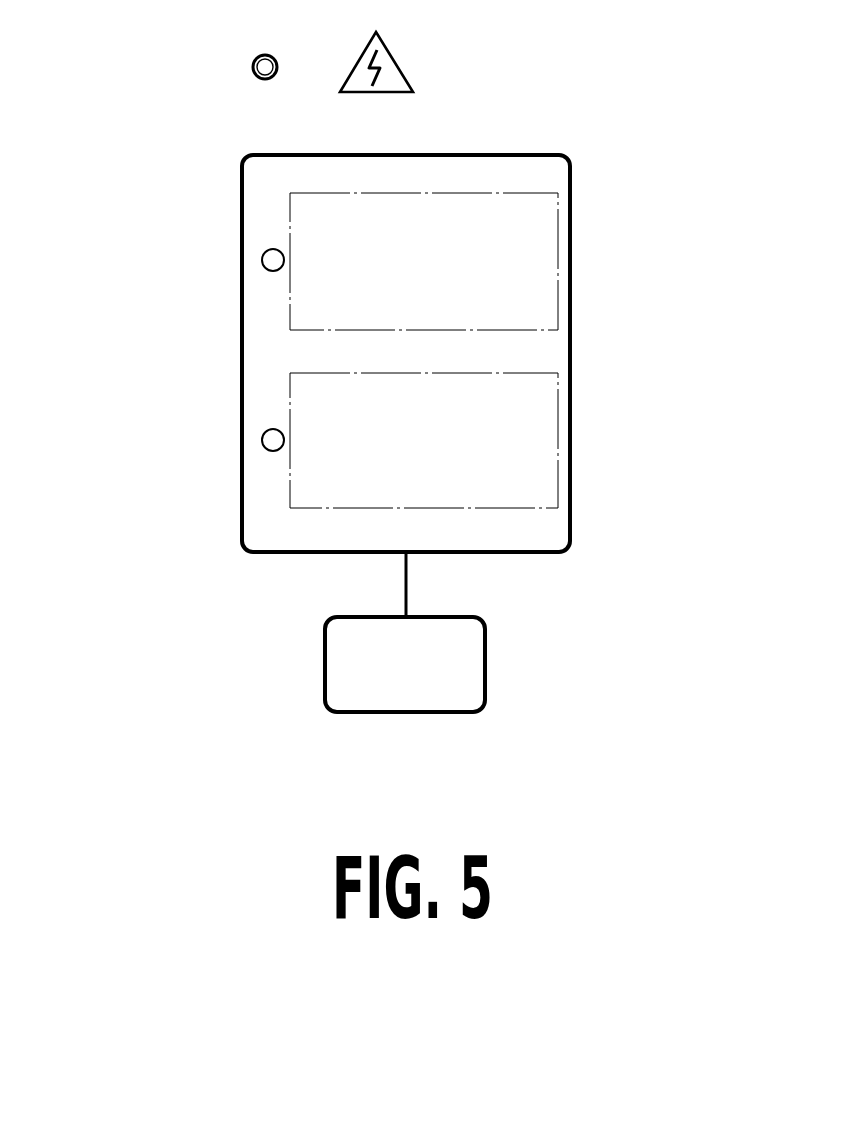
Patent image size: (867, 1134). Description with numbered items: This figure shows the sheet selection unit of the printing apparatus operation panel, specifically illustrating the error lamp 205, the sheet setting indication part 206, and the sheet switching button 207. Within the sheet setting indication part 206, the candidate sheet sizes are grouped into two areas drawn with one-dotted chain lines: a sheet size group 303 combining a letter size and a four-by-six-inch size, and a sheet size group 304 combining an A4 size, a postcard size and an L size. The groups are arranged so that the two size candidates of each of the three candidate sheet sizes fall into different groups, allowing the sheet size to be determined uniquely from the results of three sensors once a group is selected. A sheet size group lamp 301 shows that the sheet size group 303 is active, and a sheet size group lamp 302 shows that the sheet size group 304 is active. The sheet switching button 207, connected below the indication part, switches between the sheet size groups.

The error lamp 205 is at (257, 58).
The sheet setting indication part 206 is at (572, 203).
The sheet switching button 207 is at (325, 667).
The sheet size group lamp 301 is at (262, 256).
The sheet size group lamp 302 is at (262, 435).
The sheet size group 303 is at (558, 288).
The sheet size group 304 is at (558, 452).